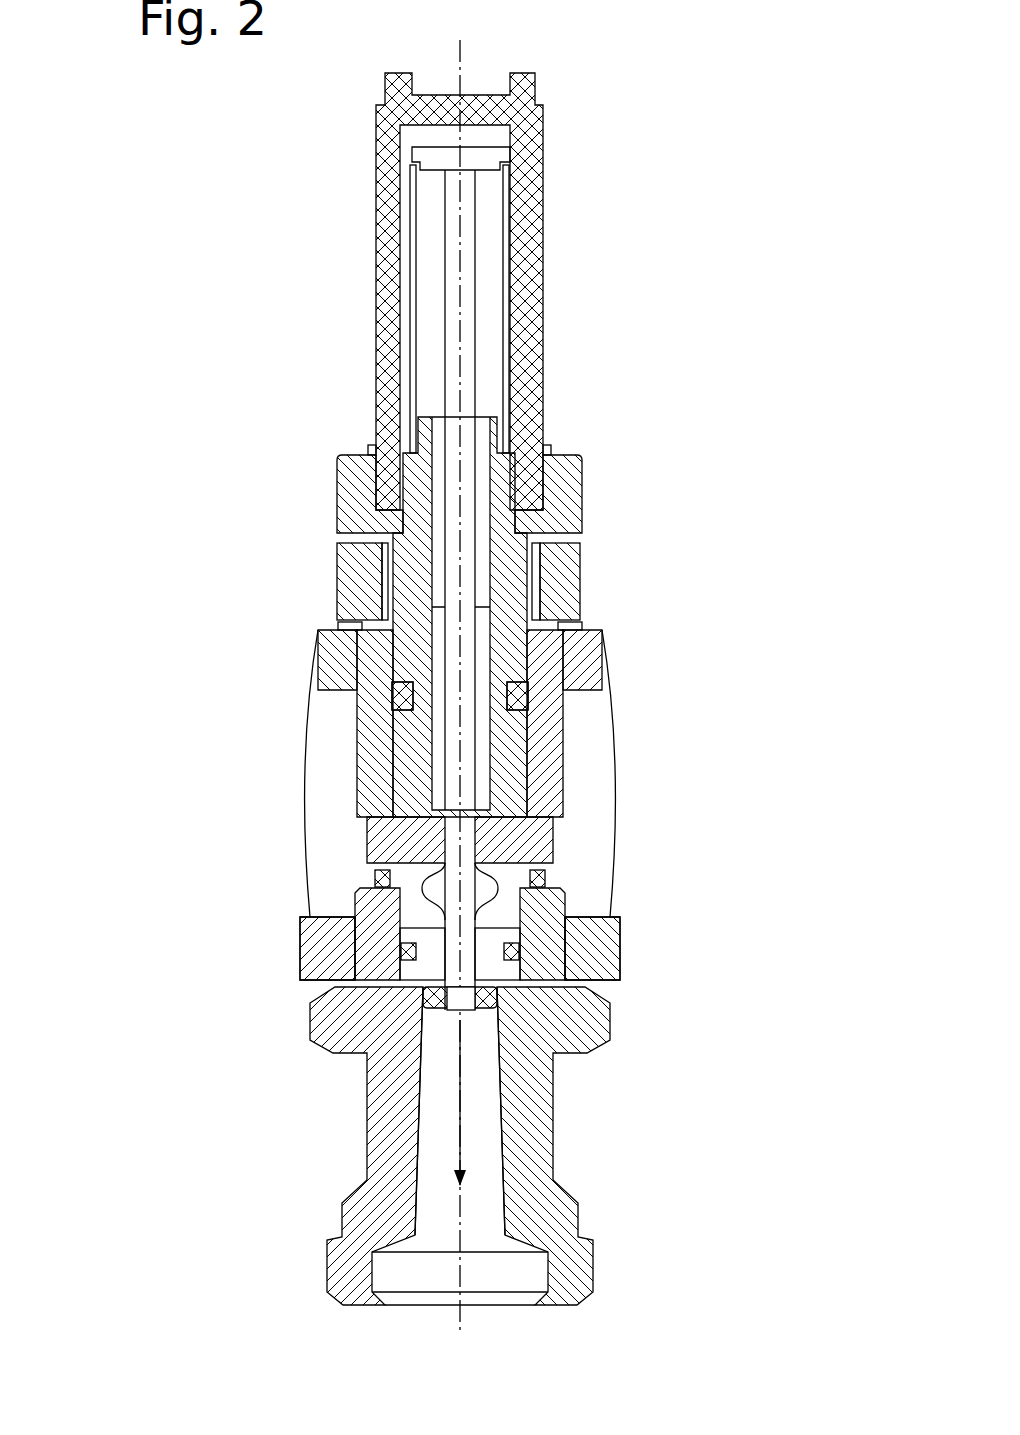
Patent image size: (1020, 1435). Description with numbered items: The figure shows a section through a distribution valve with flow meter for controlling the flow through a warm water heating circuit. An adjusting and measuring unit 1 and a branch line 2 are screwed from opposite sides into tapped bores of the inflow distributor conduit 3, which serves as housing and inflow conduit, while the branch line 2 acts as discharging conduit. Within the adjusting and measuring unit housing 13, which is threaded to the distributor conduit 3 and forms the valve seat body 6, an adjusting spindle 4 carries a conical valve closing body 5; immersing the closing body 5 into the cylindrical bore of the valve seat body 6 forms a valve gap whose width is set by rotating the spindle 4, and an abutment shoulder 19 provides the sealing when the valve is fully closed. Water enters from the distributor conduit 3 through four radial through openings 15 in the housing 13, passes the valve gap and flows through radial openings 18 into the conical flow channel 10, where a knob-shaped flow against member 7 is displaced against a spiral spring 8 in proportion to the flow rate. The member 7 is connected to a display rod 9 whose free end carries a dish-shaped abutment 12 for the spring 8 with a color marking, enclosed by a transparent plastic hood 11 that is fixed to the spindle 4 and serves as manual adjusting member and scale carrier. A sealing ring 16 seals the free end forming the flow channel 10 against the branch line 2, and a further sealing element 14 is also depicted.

The adjusting and measuring unit 1 is at (285, 535).
The branch line 2 is at (402, 1125).
The inflow distributor conduit 3 is at (590, 675).
The adjusting spindle 4 is at (537, 575).
The valve closing body 5 is at (515, 862).
The valve seat body 6 is at (535, 845).
The flow against member 7 is at (495, 1000).
The spiral spring 8 is at (412, 332).
The display rod 9 is at (466, 242).
The flow channel 10 is at (477, 1062).
The transparent plastic hood 11 is at (548, 152).
The dish-shaped abutment 12 is at (430, 150).
The adjusting and measuring unit housing 13 is at (357, 590).
The O-ring 14 is at (372, 882).
The radial through openings 15 is at (385, 795).
The sealing ring 16 is at (522, 958).
The radial openings 18 is at (415, 905).
The abutment shoulder 19 is at (382, 840).